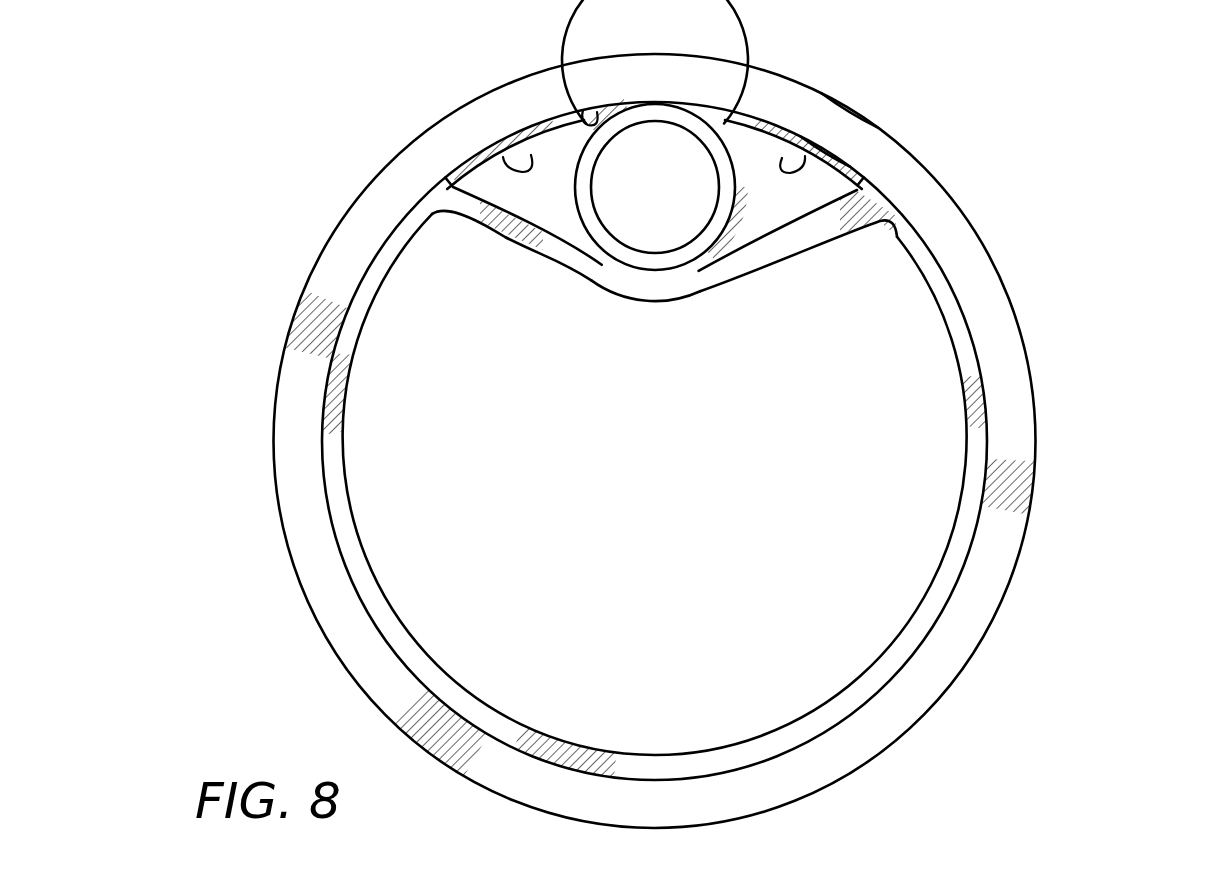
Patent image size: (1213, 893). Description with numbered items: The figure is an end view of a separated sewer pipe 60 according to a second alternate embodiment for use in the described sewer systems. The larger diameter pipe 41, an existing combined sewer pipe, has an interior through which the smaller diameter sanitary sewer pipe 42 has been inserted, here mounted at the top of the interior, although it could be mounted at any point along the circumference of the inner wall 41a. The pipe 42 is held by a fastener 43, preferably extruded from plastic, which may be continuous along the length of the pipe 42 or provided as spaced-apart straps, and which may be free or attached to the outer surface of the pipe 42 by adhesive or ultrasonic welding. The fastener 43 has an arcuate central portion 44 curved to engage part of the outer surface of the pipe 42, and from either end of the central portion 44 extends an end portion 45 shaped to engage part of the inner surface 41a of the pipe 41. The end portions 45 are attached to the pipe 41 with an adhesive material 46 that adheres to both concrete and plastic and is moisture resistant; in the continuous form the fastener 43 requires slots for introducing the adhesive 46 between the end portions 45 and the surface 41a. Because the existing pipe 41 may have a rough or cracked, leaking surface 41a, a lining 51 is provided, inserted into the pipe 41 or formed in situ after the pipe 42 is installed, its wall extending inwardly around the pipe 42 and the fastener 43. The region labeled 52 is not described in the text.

The larger diameter pipe 41 is at (980, 278).
The inner surface of the pipe 41a is at (597, 112).
The smaller diameter sanitary sewer pipe 42 is at (703, 147).
The fastener 43 is at (835, 146).
The arcuate central portion 44 is at (678, 273).
The end portion 45 is at (531, 155).
The adhesive material 46 is at (452, 178).
The lining 51 is at (396, 612).
The connecting web 52 is at (622, 288).
The separated sewer pipe 60 is at (1040, 178).